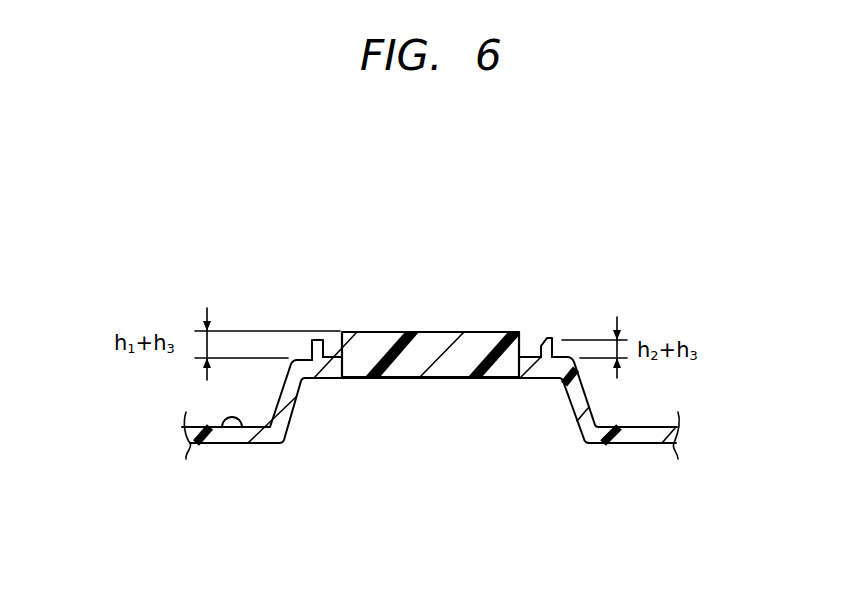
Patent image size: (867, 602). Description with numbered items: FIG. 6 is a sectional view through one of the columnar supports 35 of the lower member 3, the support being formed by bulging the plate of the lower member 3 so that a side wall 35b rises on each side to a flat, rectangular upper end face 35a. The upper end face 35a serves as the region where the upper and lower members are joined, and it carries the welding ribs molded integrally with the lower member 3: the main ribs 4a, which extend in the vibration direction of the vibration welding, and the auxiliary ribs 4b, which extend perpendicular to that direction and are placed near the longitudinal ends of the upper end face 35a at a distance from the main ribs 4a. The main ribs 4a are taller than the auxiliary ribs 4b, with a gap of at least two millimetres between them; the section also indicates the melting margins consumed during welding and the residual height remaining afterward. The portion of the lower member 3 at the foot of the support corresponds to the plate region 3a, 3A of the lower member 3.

The lower plate portion 3a is at (240, 420).
The plate member 3A is at (259, 446).
The lower member 3 is at (259, 446).
The upper end face 35a is at (529, 355).
The columnar support 35 is at (439, 303).
The side wall 35b is at (588, 398).
The main rib 4a is at (435, 331).
The auxiliary rib 4b is at (545, 337).